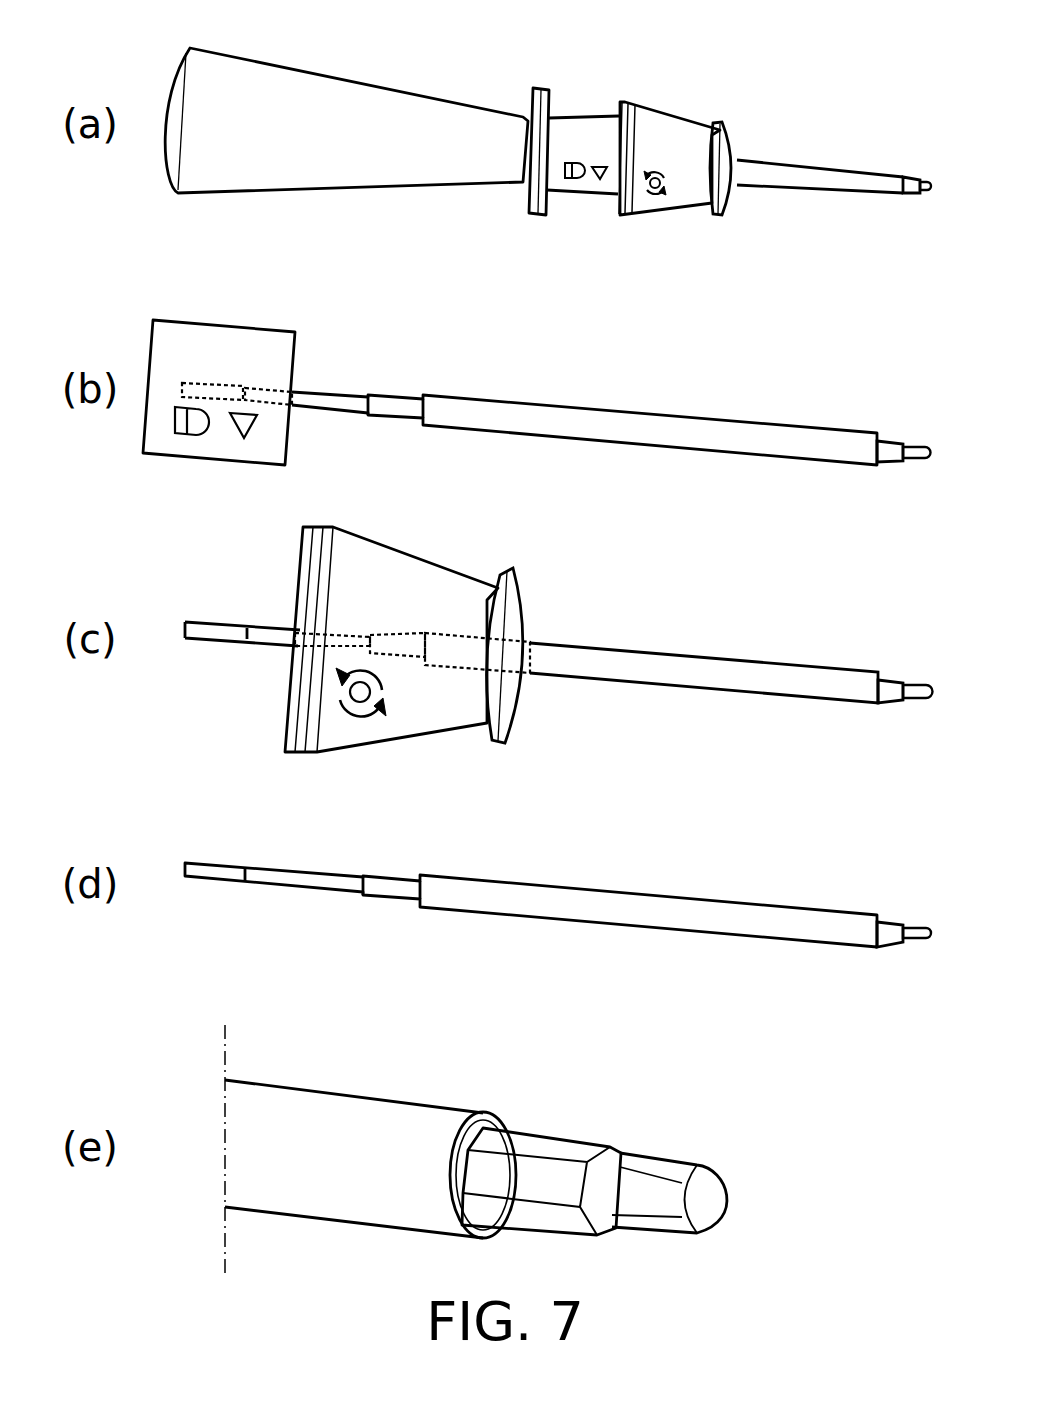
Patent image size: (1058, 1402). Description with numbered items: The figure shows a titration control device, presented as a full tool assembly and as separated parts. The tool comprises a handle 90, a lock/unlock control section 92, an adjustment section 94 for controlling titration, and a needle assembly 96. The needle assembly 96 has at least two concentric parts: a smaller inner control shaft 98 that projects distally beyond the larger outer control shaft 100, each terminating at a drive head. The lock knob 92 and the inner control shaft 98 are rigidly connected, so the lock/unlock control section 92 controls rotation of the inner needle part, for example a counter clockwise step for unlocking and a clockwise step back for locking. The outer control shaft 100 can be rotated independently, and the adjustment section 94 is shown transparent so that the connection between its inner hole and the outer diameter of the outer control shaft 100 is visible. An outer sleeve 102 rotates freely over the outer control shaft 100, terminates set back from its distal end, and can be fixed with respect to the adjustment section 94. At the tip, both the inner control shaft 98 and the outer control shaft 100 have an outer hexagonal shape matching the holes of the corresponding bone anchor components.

The handle 90 is at (290, 68).
The lock/unlock control section 92 is at (590, 118).
The adjustment section 94 is at (682, 120).
The needle assembly 96 is at (823, 140).
The inner control shaft 98 is at (925, 177).
The outer control shaft 100 is at (910, 195).
The outer sleeve 102 is at (775, 903).